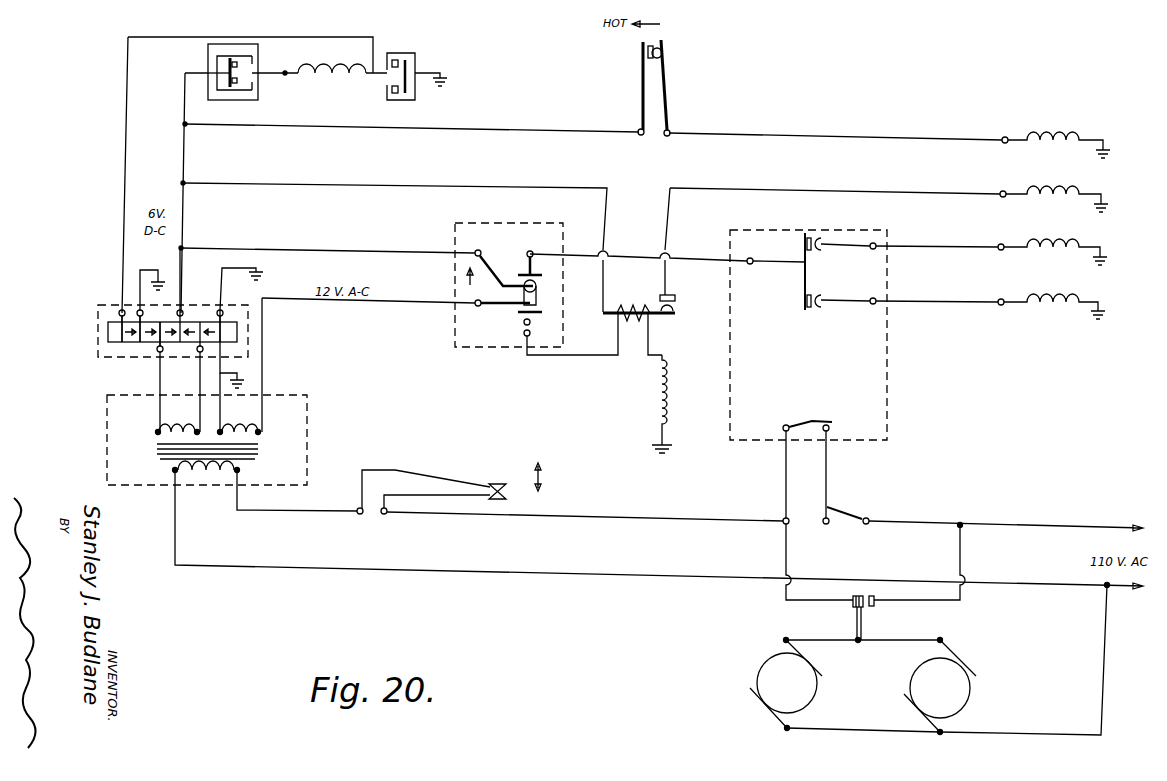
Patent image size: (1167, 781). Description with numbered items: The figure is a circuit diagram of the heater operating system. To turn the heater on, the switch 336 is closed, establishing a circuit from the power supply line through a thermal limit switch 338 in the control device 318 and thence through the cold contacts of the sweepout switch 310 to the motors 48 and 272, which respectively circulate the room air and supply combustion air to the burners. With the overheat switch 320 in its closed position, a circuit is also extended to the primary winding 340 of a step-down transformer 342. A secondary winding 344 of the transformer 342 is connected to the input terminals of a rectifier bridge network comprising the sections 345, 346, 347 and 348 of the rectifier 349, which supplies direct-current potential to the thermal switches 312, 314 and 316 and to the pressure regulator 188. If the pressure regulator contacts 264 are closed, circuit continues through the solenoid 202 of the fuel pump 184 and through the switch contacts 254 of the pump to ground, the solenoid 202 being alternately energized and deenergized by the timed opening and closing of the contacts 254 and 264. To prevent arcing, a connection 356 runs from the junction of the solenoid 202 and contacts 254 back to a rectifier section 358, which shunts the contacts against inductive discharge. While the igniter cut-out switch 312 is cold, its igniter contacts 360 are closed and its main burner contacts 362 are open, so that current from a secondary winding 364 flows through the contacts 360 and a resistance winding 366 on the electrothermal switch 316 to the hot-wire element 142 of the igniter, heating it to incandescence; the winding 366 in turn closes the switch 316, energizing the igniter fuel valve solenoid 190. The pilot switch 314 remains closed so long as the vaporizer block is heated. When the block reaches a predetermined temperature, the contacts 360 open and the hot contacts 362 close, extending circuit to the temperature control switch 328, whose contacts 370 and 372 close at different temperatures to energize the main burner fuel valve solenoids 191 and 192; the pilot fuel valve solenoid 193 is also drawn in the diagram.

The pressure regulator 188 is at (212, 42).
The pressure regulator contacts 264 is at (212, 68).
The solenoid 202 is at (340, 66).
The fuel pump 184 is at (333, 102).
The switch contacts 254 is at (410, 55).
The connection 356 is at (125, 167).
The pilot switch 314 is at (668, 62).
The pilot fuel valve 193 is at (1055, 132).
The igniter fuel valve solenoid 190 is at (1072, 190).
The main burner fuel valve solenoid 192 is at (1075, 245).
The main burner fuel valve solenoid 191 is at (1075, 300).
The igniter cut-out switch 312 is at (455, 232).
The main burner contacts 362 is at (514, 276).
The igniter contacts 360 is at (515, 311).
The resistance winding 366 is at (635, 306).
The electrothermal switch 316 is at (676, 311).
The hot-wire element 142 is at (666, 413).
The control device 318 is at (890, 401).
The temperature control switch 328 is at (806, 275).
The contacts 370 is at (812, 236).
The contacts 372 is at (812, 307).
The thermal limit switch 338 is at (800, 421).
The switch 336 is at (852, 512).
The sweepout switch 310 is at (852, 622).
The motor 48 is at (775, 666).
The motor 272 is at (950, 672).
The rectifier 349 is at (98, 339).
The rectifier section 346 is at (190, 318).
The rectifier section 345 is at (224, 316).
The rectifier section 358 is at (126, 346).
The rectifier section 348 is at (148, 344).
The rectifier section 347 is at (167, 346).
The step-down transformer 342 is at (107, 445).
The secondary winding 344 is at (162, 430).
The secondary winding 364 is at (254, 431).
The primary winding 340 is at (210, 476).
The overheat switch 320 is at (430, 476).